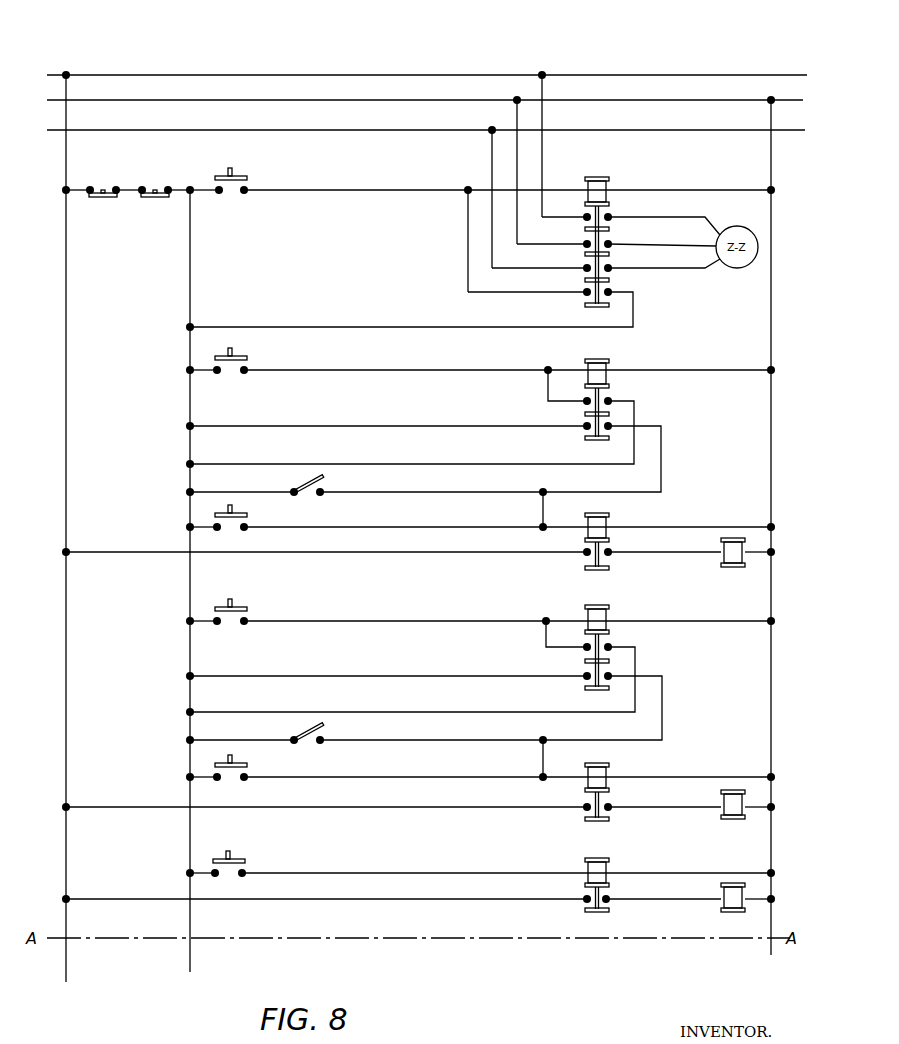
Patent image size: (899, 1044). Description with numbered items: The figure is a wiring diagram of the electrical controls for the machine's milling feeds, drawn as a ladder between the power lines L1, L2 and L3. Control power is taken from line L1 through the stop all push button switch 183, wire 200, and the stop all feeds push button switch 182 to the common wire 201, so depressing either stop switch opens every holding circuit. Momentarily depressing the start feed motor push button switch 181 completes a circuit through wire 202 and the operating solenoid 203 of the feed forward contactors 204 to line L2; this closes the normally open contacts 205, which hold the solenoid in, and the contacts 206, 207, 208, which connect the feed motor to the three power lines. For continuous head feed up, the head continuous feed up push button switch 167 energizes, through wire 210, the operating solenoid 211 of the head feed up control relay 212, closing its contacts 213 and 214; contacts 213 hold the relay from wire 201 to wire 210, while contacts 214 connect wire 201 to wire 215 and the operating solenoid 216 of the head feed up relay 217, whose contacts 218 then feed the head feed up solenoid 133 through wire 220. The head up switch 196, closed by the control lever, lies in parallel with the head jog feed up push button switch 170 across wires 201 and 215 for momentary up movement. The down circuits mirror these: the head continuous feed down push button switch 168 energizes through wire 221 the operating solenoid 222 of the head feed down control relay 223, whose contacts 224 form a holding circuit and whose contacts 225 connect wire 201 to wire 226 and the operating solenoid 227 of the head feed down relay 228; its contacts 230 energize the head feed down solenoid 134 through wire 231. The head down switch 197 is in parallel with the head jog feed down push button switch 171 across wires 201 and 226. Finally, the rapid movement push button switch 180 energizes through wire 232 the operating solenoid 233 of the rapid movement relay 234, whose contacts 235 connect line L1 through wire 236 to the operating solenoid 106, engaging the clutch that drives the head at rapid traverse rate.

The power line L1 is at (238, 78).
The power line L2 is at (238, 103).
The power line L3 is at (238, 133).
The wire 200 is at (128, 197).
The wire 201 is at (190, 246).
The wire 202 is at (333, 189).
The start feed motor push button switch 181 is at (231, 169).
The stop all feeds push button switch 182 is at (155, 187).
The stop all push button switch 183 is at (103, 187).
The operating solenoid 203 is at (600, 176).
The feed forward contactors 204 is at (588, 307).
The normally open contacts 205 is at (610, 296).
The normally open contacts 206 is at (606, 222).
The normally open contacts 207 is at (607, 248).
The normally open contacts 208 is at (607, 271).
The head continuous feed up push button switch 167 is at (234, 350).
The wire 210 is at (358, 353).
The operating solenoid 211 is at (603, 360).
The head feed up control relay 212 is at (588, 441).
The normally open contacts 213 is at (610, 401).
The normally open contacts 214 is at (610, 427).
The wire 215 is at (662, 456).
The head up switch 196 is at (293, 489).
The head jog feed up push button switch 170 is at (236, 508).
The operating solenoid 216 is at (604, 520).
The head feed up relay 217 is at (588, 570).
The normally open contacts 218 is at (610, 556).
The wire 220 is at (668, 540).
The head feed up solenoid 133 is at (731, 568).
The head continuous feed down push button switch 168 is at (233, 598).
The wire 221 is at (356, 606).
The operating solenoid 222 is at (604, 607).
The head feed down control relay 223 is at (590, 690).
The normally open contacts 224 is at (610, 648).
The normally open contacts 225 is at (612, 677).
The wire 226 is at (664, 700).
The head down switch 197 is at (293, 737).
The head jog feed down push button switch 171 is at (236, 757).
The operating solenoid 227 is at (604, 765).
The head feed down relay 228 is at (590, 822).
The normally open contacts 230 is at (610, 808).
The wire 231 is at (660, 808).
The head feed down solenoid 134 is at (731, 820).
The rapid movement push button switch 180 is at (231, 852).
The wire 232 is at (318, 875).
The operating solenoid 233 is at (598, 858).
The rapid movement relay 234 is at (588, 914).
The normally open contacts 235 is at (602, 896).
The wire 236 is at (626, 902).
The operating solenoid 106 is at (731, 913).